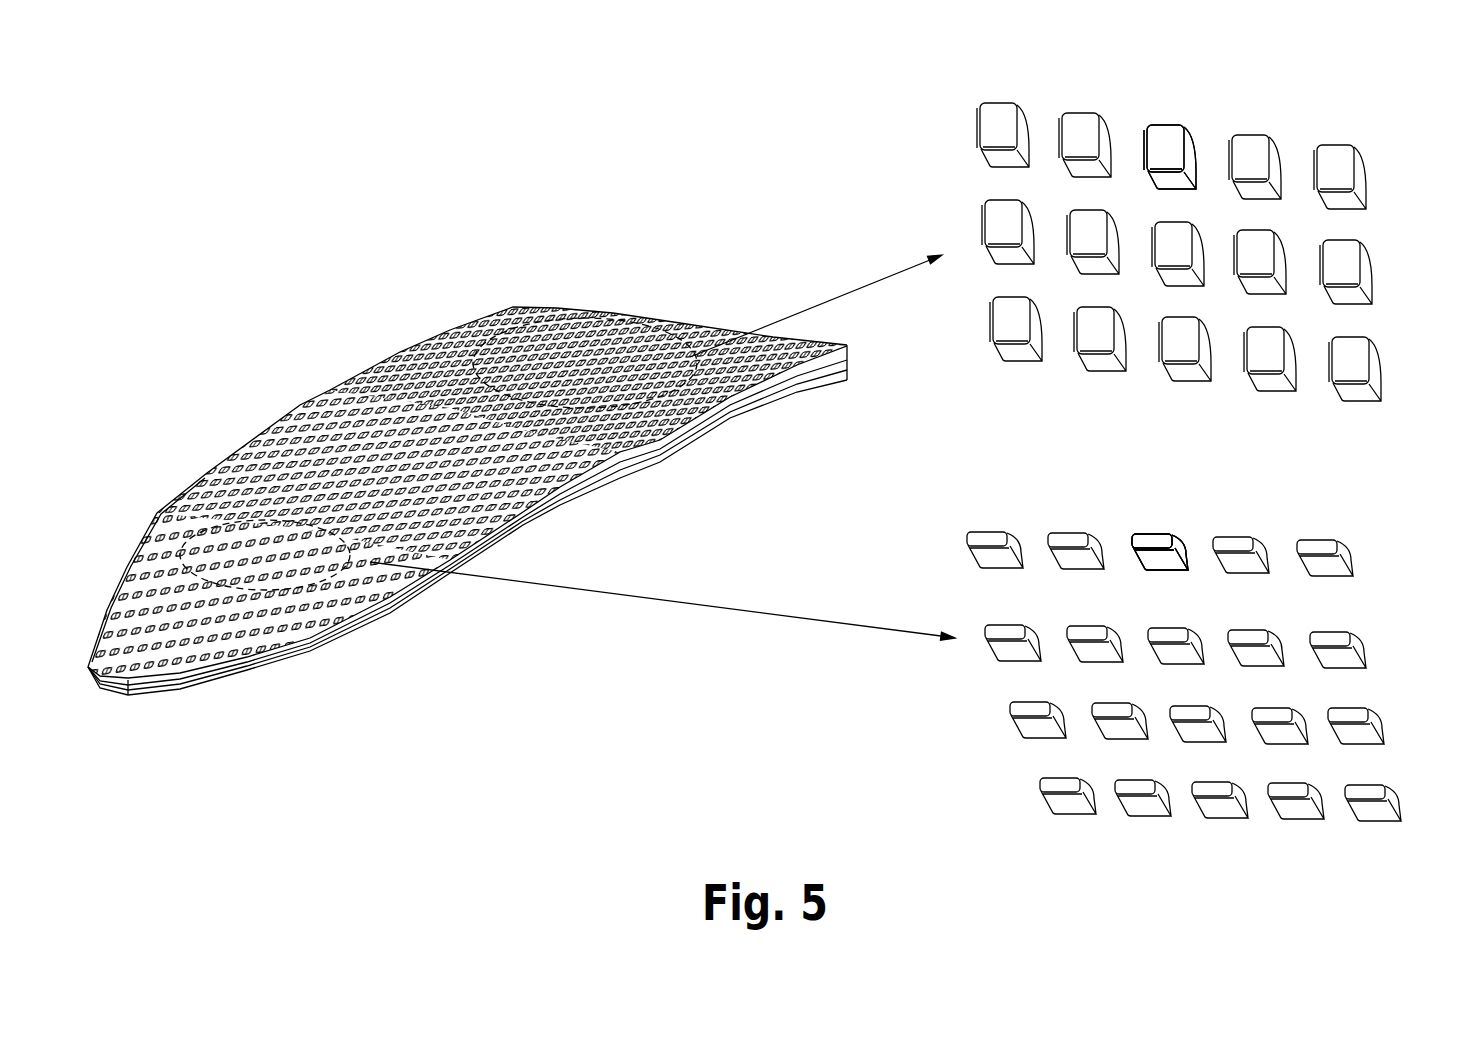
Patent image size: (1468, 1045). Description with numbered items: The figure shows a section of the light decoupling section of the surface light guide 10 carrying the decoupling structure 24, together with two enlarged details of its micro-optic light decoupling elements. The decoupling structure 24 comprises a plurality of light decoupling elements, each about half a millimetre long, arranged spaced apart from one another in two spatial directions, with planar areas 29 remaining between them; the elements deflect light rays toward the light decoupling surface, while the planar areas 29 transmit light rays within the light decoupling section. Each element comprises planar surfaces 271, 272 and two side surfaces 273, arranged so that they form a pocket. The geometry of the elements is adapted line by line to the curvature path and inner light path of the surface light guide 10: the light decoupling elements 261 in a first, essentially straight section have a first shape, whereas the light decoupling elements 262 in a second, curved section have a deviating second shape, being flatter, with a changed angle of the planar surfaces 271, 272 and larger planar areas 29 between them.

The surface light guide 10 is at (254, 304).
The decoupling structure 24 is at (241, 440).
The planar areas 29 is at (1048, 187).
The light decoupling elements 261 is at (440, 357).
The light decoupling elements 262 is at (383, 602).
The planar surface 271 is at (1172, 147).
The planar surface 272 is at (1178, 185).
The side surfaces 273 is at (1112, 150).